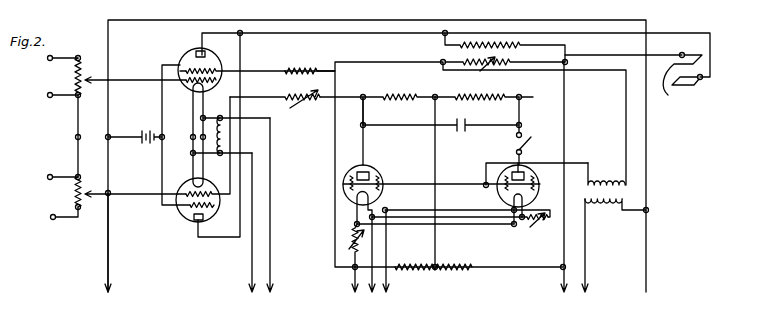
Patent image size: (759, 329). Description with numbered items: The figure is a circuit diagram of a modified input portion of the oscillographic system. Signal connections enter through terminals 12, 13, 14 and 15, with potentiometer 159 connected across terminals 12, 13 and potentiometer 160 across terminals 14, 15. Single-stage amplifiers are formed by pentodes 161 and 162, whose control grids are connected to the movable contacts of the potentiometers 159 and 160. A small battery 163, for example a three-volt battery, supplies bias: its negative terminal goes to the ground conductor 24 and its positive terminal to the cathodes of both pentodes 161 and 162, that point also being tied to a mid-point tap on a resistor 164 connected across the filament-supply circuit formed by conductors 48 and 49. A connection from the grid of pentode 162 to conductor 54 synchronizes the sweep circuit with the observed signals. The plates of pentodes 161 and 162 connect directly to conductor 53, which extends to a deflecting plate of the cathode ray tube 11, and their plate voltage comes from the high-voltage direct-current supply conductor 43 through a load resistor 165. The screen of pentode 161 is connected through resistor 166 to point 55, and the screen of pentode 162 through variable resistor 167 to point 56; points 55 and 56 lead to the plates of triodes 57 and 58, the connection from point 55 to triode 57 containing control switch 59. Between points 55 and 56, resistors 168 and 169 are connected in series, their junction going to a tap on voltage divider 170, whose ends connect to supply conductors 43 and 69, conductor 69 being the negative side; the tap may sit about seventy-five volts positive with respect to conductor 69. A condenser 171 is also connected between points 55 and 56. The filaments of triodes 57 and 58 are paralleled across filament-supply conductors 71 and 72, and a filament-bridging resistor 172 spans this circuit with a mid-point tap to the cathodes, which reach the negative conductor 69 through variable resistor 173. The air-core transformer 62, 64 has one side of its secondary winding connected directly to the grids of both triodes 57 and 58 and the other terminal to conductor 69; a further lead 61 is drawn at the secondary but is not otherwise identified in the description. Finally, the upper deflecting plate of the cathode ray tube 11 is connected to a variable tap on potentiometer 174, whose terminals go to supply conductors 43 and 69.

The cathode ray tube 11 is at (682, 84).
The terminal 12 is at (47, 60).
The terminal 13 is at (47, 97).
The terminal 14 is at (47, 178).
The terminal 15 is at (50, 217).
The ground conductor 24 is at (648, 315).
The high-voltage direct-current supply conductor 43 is at (563, 315).
The filament-supply conductor 48 is at (279, 315).
The filament-supply conductor 49 is at (256, 315).
The conductor 53 is at (660, 33).
The conductor 54 is at (114, 315).
The circuit point 55 is at (537, 99).
The circuit point 56 is at (361, 100).
The triode 57 is at (534, 185).
The triode 58 is at (379, 176).
The control switch 59 is at (533, 148).
The conductor 61 is at (592, 315).
The air-core transformer winding 62 is at (604, 205).
The air-core transformer winding 64 is at (605, 180).
The negative direct-current supply conductor 69 is at (356, 315).
The filament-supply conductor 71 is at (398, 315).
The filament-supply conductor 72 is at (377, 315).
The potentiometer 159 is at (76, 77).
The potentiometer 160 is at (114, 192).
The pentode 161 is at (188, 53).
The pentode 162 is at (183, 223).
The battery 163 is at (142, 146).
The resistor 164 is at (224, 130).
The load resistor 165 is at (442, 46).
The resistor 166 is at (308, 68).
The variable resistor 167 is at (275, 107).
The resistor 168 is at (477, 90).
The resistor 169 is at (410, 87).
The voltage divider 170 is at (478, 271).
The condenser 171 is at (461, 133).
The filament-bridging resistor 172 is at (540, 226).
The variable resistor 173 is at (347, 242).
The potentiometer 174 is at (440, 62).